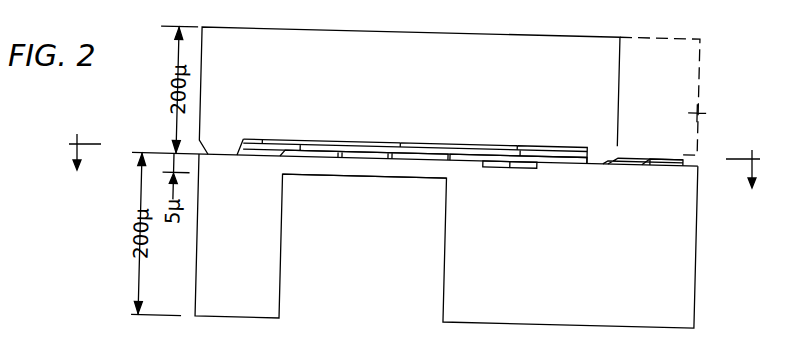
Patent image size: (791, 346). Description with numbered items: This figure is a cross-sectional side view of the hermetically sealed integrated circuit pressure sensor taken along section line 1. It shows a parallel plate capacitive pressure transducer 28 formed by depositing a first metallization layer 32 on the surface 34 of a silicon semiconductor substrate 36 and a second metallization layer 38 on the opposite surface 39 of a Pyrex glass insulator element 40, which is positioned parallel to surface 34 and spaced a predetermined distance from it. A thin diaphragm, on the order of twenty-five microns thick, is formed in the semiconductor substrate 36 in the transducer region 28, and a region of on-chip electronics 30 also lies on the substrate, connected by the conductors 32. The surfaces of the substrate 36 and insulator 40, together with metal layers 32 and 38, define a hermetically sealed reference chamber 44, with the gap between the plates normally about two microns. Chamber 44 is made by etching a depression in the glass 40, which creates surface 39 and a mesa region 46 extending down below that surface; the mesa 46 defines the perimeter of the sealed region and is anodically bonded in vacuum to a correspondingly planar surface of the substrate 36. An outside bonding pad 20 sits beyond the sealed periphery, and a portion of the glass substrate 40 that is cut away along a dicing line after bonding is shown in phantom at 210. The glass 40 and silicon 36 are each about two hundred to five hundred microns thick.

The section line 1 is at (414, 161).
The bonding pad 20 is at (650, 157).
The capacitive pressure transducer region 28 is at (335, 169).
The on-chip electronics 30 is at (531, 167).
The first metallization layer 32 is at (280, 153).
The surface 34 is at (587, 158).
The semiconductor substrate 36 is at (546, 258).
The second metallization layer 38 is at (365, 147).
The surface 39 is at (273, 146).
The insulator element 40 is at (400, 91).
The hermetically sealed reference chamber 44 is at (476, 157).
The mesa region 46 is at (213, 150).
The portion of glass substrate 210 is at (685, 96).